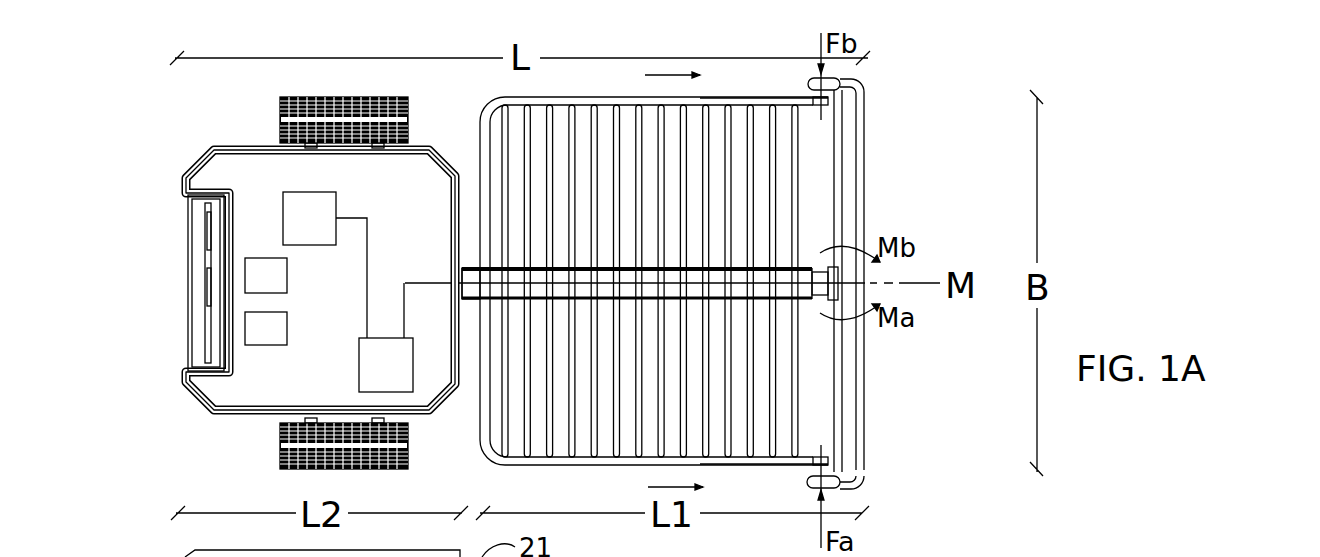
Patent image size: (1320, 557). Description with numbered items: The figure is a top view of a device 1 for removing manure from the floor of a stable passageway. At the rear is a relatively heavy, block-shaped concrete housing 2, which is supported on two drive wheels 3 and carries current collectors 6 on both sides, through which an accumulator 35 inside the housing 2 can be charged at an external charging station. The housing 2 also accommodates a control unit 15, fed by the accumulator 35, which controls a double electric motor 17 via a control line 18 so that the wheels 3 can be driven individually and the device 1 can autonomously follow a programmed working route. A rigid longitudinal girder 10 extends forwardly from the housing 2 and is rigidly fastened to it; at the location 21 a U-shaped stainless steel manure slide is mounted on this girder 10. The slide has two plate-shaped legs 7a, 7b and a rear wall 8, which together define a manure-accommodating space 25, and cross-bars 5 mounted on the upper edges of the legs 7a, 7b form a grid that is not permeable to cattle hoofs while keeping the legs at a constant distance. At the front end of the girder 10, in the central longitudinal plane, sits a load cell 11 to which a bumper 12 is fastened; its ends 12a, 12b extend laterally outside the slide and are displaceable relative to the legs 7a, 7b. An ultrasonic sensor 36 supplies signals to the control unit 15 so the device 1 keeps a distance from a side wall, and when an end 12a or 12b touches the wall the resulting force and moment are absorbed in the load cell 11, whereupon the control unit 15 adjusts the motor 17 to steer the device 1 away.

The device 1 is at (172, 165).
The housing 2 is at (318, 310).
The drive wheels 3 is at (313, 97).
The cross-bars 5 is at (705, 407).
The current collectors 6 is at (225, 416).
The leg 7a is at (716, 462).
The leg 7b is at (716, 100).
The rear wall 8 is at (480, 297).
The longitudinal girder 10 is at (695, 277).
The load cell 11 is at (821, 277).
The bumper 12 is at (857, 383).
The bumper end 12a is at (838, 480).
The bumper end 12b is at (840, 88).
The control unit 15 is at (388, 365).
The double electric motor 17 is at (330, 234).
The control line 18 is at (367, 260).
The mounting location 21 is at (485, 403).
The manure-accommodating space 25 is at (557, 382).
The accumulator 35 is at (245, 325).
The ultrasonic sensor 36 is at (245, 275).